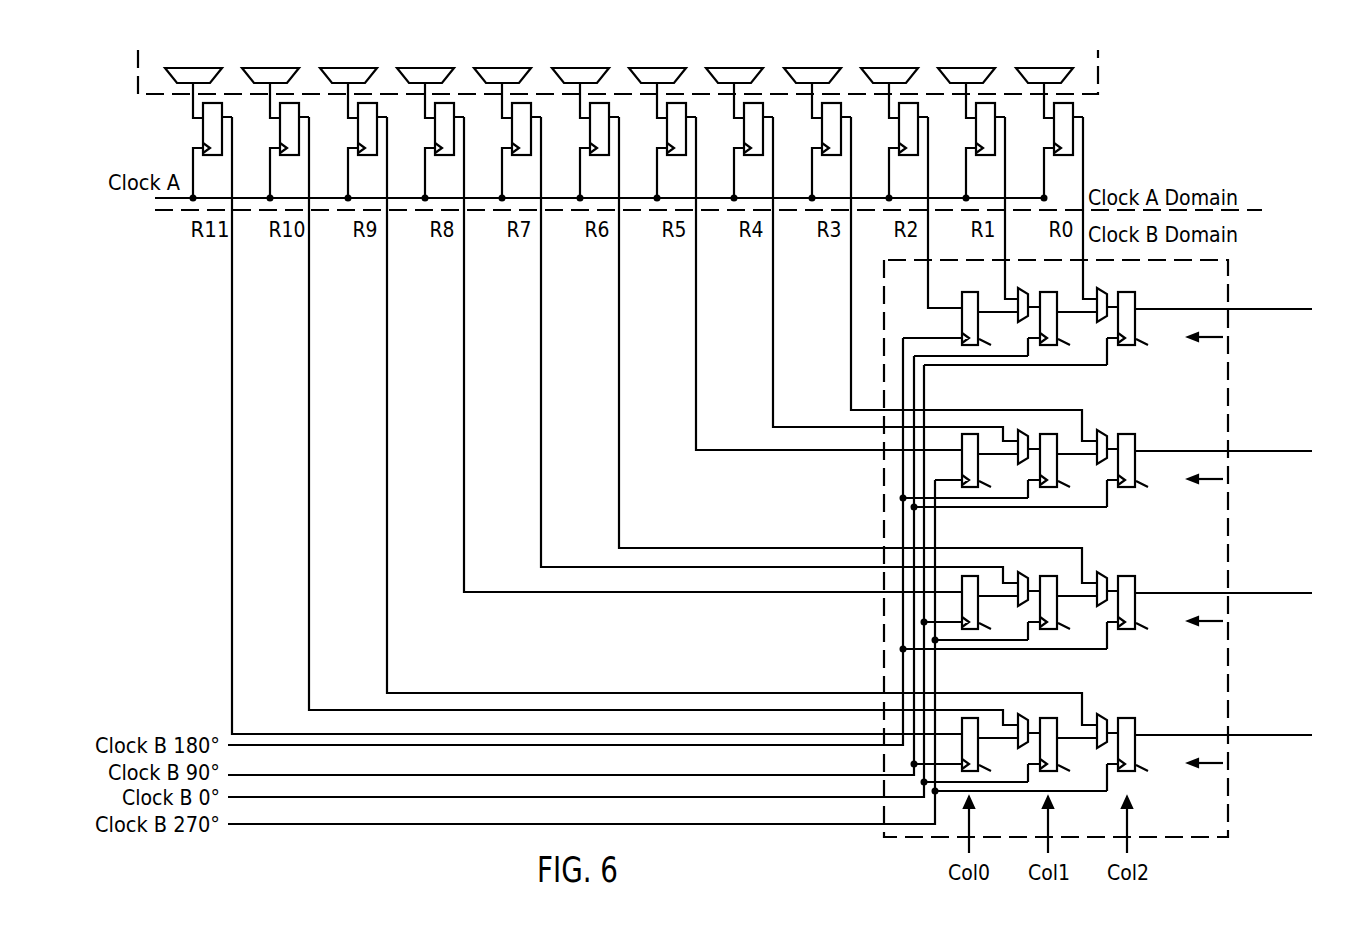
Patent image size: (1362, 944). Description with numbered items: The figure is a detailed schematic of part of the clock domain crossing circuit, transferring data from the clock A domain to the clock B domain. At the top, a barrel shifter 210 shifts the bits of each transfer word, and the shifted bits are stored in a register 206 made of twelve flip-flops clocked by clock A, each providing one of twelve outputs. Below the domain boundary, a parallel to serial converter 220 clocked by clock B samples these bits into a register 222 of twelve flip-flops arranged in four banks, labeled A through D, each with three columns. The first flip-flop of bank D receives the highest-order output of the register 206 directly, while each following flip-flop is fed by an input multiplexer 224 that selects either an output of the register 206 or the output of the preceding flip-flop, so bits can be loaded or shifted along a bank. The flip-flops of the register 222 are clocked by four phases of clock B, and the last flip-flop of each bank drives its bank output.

The barrel shifter 210 is at (1100, 65).
The register 206 is at (1112, 140).
The parallel to serial converter 220 is at (1192, 838).
The register 222 is at (1158, 273).
The input multiplexer 224 is at (1098, 293).